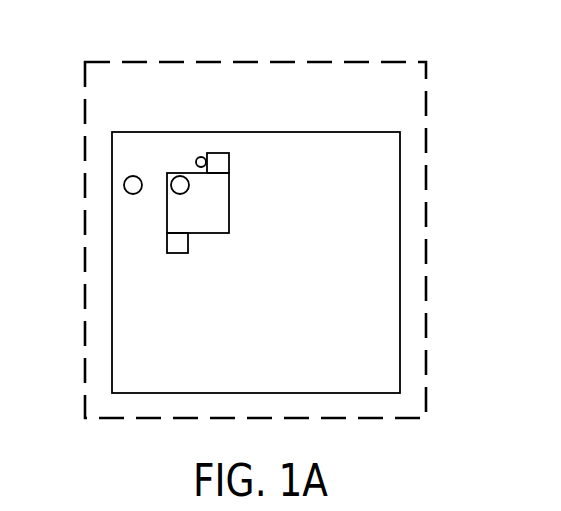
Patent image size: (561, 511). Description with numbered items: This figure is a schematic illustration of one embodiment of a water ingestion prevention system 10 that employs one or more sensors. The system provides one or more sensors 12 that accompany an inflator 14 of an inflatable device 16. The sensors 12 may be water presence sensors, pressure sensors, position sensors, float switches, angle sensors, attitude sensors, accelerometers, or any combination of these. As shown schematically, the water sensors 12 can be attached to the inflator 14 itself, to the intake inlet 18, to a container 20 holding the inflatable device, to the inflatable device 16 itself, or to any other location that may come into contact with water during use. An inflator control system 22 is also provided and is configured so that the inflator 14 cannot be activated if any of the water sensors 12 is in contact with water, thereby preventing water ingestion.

The water ingestion prevention system 10 is at (451, 95).
The sensors 12 is at (180, 176).
The inflator 14 is at (186, 219).
The inflatable device 16 is at (298, 266).
The intake inlet 18 is at (219, 153).
The container 20 is at (427, 270).
The inflator control system 22 is at (167, 243).